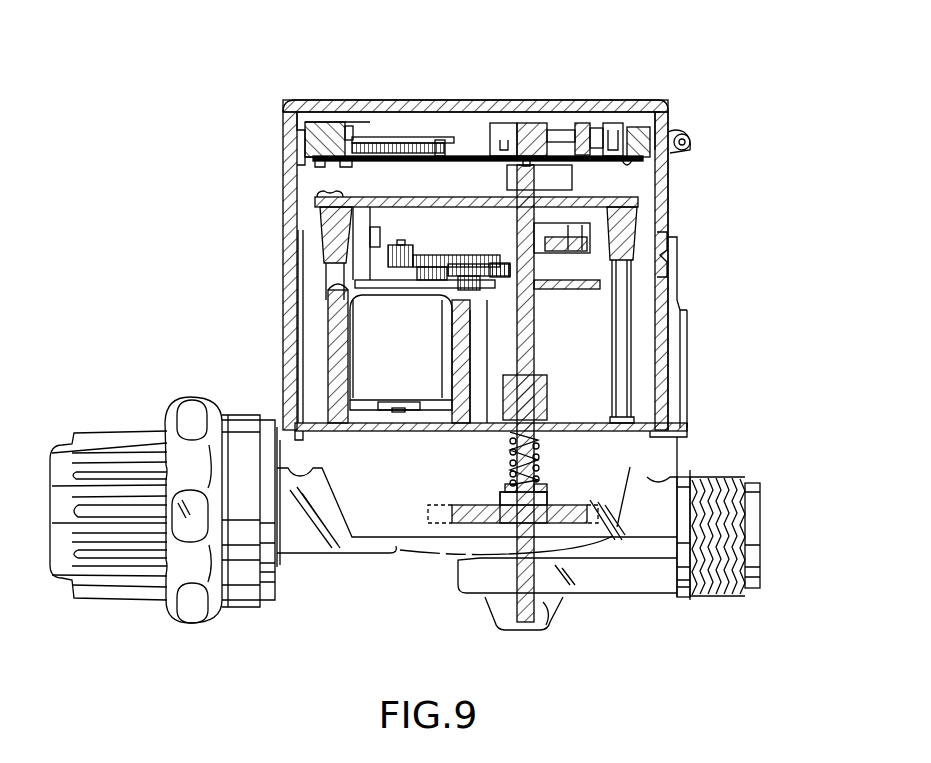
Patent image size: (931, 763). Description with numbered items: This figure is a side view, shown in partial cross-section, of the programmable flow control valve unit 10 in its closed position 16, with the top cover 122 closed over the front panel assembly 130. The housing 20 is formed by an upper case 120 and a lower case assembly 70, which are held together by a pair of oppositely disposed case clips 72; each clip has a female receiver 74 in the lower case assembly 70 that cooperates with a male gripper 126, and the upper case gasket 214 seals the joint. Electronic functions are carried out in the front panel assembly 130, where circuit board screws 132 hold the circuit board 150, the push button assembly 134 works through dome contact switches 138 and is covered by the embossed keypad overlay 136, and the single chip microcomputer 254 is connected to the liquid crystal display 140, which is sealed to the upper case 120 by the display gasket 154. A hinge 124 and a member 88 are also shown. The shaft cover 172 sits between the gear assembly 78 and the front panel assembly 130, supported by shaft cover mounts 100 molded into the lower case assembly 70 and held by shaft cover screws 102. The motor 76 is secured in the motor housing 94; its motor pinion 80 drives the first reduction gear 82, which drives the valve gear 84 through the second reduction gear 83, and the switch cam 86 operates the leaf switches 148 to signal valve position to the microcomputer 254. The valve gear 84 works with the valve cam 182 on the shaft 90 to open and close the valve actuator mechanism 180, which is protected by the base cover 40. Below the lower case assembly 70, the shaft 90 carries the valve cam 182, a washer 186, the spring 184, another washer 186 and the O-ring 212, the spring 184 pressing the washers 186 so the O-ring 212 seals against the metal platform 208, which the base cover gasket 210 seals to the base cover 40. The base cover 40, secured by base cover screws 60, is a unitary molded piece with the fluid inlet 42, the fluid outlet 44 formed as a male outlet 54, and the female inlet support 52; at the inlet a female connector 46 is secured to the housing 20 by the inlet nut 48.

The programmable flow control valve unit 10 is at (818, 75).
The closed position 16 is at (270, 92).
The housing 20 is at (199, 53).
The base cover 40 is at (373, 517).
The fluid inlet 42 is at (47, 509).
The fluid outlet 44 is at (771, 530).
The female connector 46 is at (100, 592).
The inlet nut 48 is at (190, 622).
The female inlet support 52 is at (240, 607).
The male outlet 54 is at (717, 597).
The base cover screws 60 is at (307, 483).
The lower case assembly 70 is at (290, 373).
The case clips 72 is at (676, 250).
The female receiver 74 is at (679, 294).
The motor 76 is at (350, 343).
The gear assembly 78 is at (787, 405).
The motor pinion 80 is at (417, 270).
The first reduction gear 82 is at (388, 258).
The second reduction gear 83 is at (444, 291).
The valve gear 84 is at (630, 347).
The switch cam 86 is at (632, 330).
The gear plate 88 is at (457, 287).
The shaft 90 is at (560, 603).
The motor housing 94 is at (337, 337).
The shaft cover mounts 100 is at (550, 377).
The shaft cover screws 102 is at (340, 198).
The upper case 120 is at (285, 152).
The top cover 122 is at (565, 123).
The hinge 124 is at (691, 142).
The male gripper 126 is at (675, 272).
The front panel assembly 130 is at (787, 95).
The circuit board screws 132 is at (330, 165).
The push button assembly 134 is at (518, 124).
The keypad overlay 136 is at (633, 125).
The dome contact switches 138 is at (600, 188).
The liquid crystal display 140 is at (403, 140).
The leaf switches 148 is at (330, 229).
The circuit board 150 is at (572, 180).
The display gasket 154 is at (437, 138).
The shaft cover 172 is at (640, 208).
The valve actuator mechanism 180 is at (787, 517).
The valve cam 182 is at (472, 515).
The spring 184 is at (490, 448).
The washer 186 is at (500, 440).
The metal platform 208 is at (655, 437).
The base cover gasket 210 is at (688, 430).
The O-ring 212 is at (560, 447).
The upper case gasket 214 is at (672, 237).
The single chip microcomputer 254 is at (345, 185).